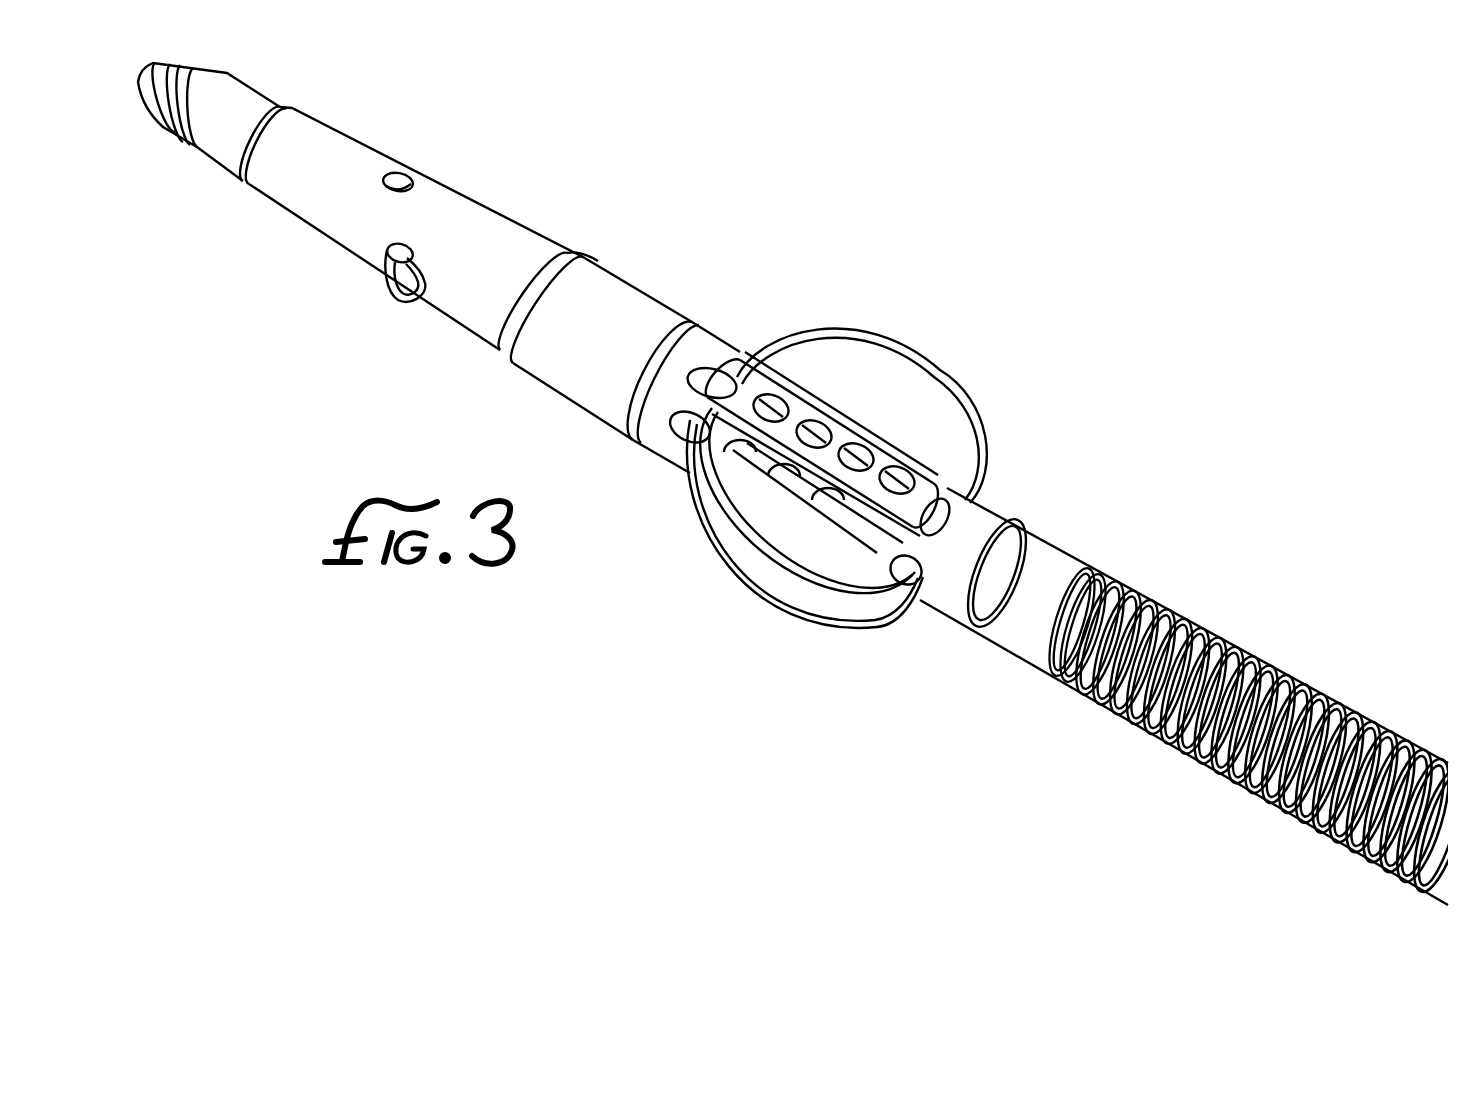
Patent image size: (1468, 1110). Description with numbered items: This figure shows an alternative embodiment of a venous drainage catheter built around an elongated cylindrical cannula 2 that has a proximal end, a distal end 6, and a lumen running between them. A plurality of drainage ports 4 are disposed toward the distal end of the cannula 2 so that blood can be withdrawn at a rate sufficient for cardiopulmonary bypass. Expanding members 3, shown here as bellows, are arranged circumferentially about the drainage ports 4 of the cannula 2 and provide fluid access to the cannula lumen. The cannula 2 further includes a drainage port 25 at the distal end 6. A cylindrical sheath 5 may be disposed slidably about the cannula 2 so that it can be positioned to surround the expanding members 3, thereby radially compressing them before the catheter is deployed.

The cannula 2 is at (1217, 630).
The expanding members 3 is at (901, 320).
The drainage ports 4 is at (773, 413).
The cylindrical sheath 5 is at (997, 517).
The distal end 6 is at (492, 210).
The drainage port 25 is at (405, 283).